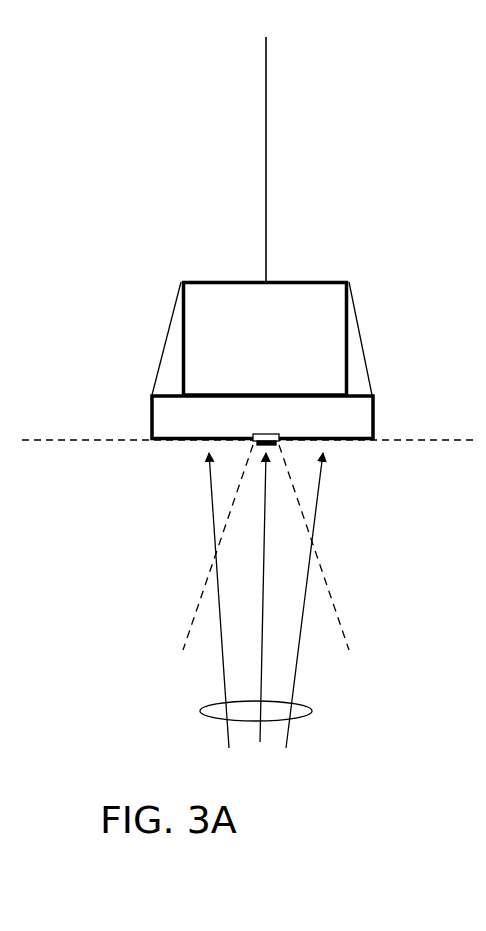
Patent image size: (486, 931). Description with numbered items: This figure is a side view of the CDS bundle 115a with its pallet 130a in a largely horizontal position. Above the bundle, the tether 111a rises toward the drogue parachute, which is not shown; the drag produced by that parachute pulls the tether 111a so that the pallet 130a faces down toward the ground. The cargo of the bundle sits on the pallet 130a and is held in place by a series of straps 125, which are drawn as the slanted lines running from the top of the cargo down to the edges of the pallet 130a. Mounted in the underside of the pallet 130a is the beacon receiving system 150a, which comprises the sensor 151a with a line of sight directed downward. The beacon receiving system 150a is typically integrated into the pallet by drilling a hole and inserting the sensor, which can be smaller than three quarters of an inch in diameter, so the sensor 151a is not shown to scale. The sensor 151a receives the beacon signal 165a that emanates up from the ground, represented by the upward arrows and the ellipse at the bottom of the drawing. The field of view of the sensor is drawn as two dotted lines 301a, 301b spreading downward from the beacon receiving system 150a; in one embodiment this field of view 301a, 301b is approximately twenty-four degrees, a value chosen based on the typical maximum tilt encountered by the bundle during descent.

The tether 111a is at (266, 162).
The CDS bundle 115a is at (147, 312).
The straps 125 is at (360, 339).
The pallet 130a is at (152, 427).
The beacon receiving system 150a is at (271, 434).
The sensor 151a is at (277, 442).
The field of view 301a is at (208, 572).
The field of view 301b is at (322, 571).
The beacon signal 165a is at (205, 717).